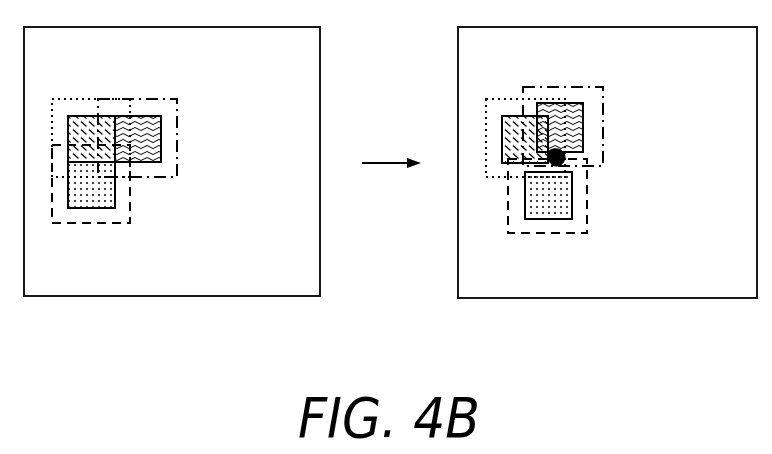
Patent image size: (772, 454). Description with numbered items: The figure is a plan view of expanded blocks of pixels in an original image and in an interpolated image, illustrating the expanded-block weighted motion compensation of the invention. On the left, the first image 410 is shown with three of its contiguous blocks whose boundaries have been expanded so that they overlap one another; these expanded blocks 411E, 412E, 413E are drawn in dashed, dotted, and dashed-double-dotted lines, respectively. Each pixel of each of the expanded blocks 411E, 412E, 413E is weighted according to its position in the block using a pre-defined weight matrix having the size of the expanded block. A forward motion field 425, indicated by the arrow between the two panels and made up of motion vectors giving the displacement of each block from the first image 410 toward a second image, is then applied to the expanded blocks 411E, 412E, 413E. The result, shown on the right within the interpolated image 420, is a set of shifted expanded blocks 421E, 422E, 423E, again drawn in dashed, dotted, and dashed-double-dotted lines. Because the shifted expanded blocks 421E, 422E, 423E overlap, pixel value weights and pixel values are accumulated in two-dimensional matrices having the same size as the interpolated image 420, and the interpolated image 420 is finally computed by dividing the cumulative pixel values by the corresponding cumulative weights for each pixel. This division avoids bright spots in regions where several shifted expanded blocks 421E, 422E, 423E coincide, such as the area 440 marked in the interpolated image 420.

The first image 410 is at (278, 282).
The expanded block 411E is at (84, 100).
The expanded block 412E is at (138, 100).
The expanded block 413E is at (84, 223).
The forward motion field 425 is at (393, 164).
The interpolated image 420 is at (735, 285).
The shifted expanded block 421E is at (508, 99).
The shifted expanded block 422E is at (602, 100).
The shifted expanded block 423E is at (587, 203).
The area of multiple overlaps 440 is at (565, 160).